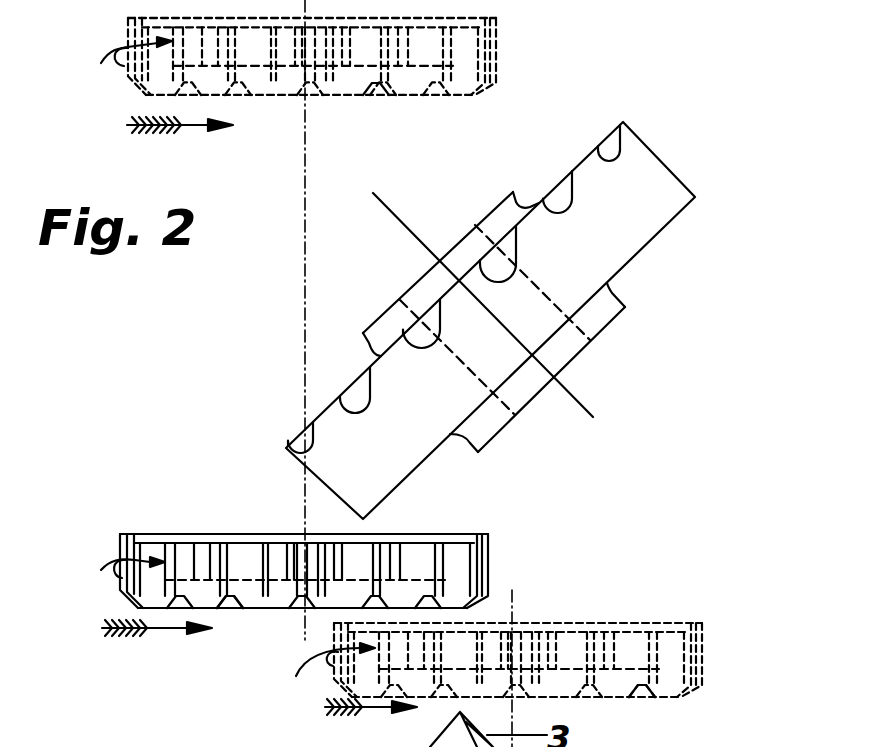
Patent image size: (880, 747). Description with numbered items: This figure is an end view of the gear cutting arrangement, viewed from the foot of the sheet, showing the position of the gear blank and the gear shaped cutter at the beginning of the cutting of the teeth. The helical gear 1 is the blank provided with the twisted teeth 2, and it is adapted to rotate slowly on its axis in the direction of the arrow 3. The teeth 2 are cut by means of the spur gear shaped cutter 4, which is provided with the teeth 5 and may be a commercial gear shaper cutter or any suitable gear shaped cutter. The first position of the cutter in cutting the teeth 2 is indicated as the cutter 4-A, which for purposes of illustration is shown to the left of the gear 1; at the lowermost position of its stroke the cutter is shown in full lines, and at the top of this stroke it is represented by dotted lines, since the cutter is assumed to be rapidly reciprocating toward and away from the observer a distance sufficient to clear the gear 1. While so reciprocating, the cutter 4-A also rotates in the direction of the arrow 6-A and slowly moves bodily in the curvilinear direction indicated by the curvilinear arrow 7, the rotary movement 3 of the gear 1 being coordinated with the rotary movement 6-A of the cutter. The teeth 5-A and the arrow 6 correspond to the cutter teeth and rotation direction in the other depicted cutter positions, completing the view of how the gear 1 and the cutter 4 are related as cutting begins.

The helical gear 1 is at (400, 457).
The twisted teeth 2 is at (347, 412).
The arrow 3 is at (622, 196).
The spur gear shaped cutter 4 is at (603, 623).
The teeth 5 is at (640, 682).
The direction arrow 6 is at (321, 670).
The curvilinear arrow 7 is at (188, 125).
The cutter in first position 4-A is at (433, 99).
The foot of tray in alternate position 5-A is at (377, 86).
The arrow 6-A is at (103, 315).